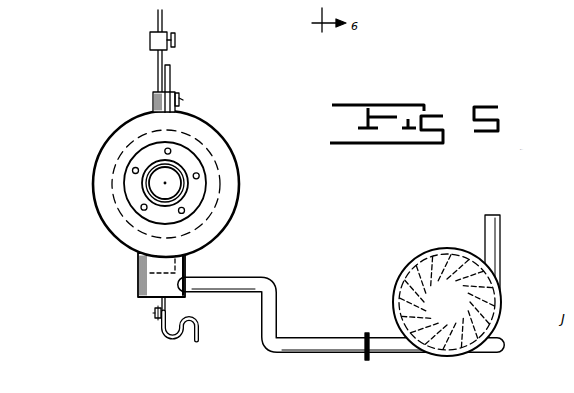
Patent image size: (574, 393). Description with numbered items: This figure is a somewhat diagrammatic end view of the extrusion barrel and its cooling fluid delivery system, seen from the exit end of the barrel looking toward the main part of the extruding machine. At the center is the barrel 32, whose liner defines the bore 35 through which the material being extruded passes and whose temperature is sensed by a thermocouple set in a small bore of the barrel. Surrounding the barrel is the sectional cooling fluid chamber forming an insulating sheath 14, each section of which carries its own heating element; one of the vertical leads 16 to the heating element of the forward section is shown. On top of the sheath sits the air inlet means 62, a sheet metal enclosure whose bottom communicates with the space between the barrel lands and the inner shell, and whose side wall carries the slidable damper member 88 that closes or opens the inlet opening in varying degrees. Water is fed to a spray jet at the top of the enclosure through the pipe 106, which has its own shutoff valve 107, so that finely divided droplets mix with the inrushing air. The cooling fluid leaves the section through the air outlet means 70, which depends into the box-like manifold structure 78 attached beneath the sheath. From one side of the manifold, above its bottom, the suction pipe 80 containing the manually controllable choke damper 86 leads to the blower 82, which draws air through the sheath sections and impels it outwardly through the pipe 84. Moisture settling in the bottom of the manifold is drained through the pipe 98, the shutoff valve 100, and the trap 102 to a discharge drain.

The insulating sheath 14 is at (225, 133).
The lead 16 is at (170, 72).
The barrel 32 is at (130, 190).
The bore 35 is at (153, 178).
The air inlet means 62 is at (153, 92).
The air outlet means 70 is at (183, 265).
The manifold structure 78 is at (138, 296).
The suction pipe 80 is at (262, 278).
The blower 82 is at (430, 250).
The pipe 84 is at (497, 243).
The choke damper 86 is at (367, 358).
The damper member 88 is at (180, 97).
The pipe 98 is at (168, 305).
The shutoff valve 100 is at (157, 316).
The trap 102 is at (180, 340).
The pipe 106 is at (158, 12).
The shutoff valve 107 is at (150, 40).